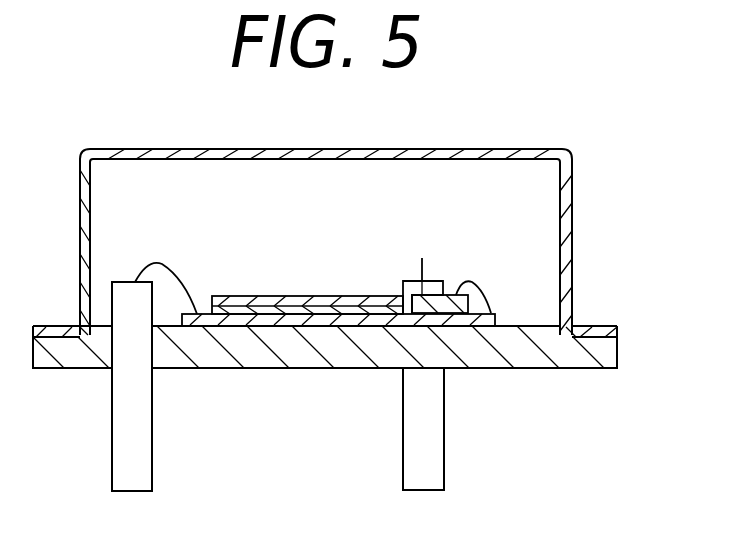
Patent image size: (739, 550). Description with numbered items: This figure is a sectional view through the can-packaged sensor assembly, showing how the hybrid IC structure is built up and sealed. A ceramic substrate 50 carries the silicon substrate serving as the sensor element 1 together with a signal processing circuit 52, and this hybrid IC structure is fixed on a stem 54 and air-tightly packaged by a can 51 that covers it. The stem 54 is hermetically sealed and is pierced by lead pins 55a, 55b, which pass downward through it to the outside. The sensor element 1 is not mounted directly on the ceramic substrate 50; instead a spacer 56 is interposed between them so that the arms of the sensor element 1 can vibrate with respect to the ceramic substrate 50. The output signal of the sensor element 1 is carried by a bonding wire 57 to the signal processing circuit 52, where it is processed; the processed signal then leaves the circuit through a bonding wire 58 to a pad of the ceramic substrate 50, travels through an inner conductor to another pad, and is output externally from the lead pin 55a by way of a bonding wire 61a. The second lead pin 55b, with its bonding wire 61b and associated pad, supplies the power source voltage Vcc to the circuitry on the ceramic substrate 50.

The silicon substrate (sensor element) 1 is at (226, 296).
The ceramic substrate 50 is at (322, 328).
The can 51 is at (547, 150).
The signal processing circuit 52 is at (460, 291).
The stem 54 is at (489, 368).
The lead pin 55a is at (152, 444).
The lead pin 55b is at (444, 456).
The spacer 56 is at (326, 297).
The bonding wire 57 is at (398, 283).
The bonding wire 58 is at (483, 283).
The bonding wire 61a is at (182, 242).
The bonding wire 61b is at (422, 258).